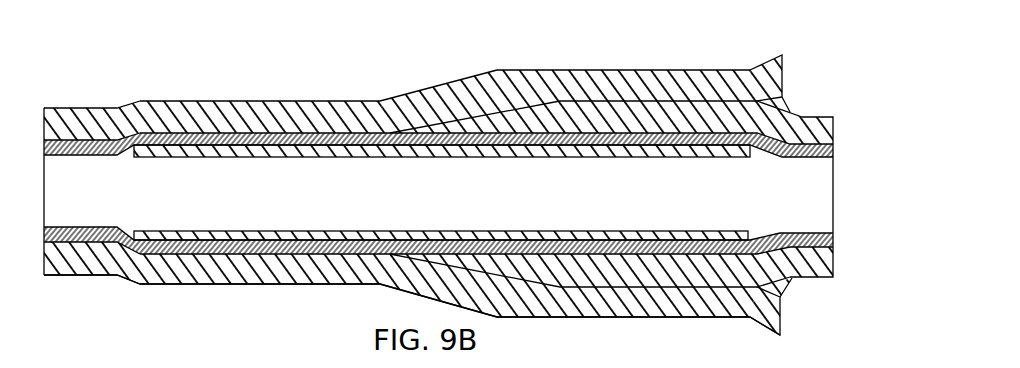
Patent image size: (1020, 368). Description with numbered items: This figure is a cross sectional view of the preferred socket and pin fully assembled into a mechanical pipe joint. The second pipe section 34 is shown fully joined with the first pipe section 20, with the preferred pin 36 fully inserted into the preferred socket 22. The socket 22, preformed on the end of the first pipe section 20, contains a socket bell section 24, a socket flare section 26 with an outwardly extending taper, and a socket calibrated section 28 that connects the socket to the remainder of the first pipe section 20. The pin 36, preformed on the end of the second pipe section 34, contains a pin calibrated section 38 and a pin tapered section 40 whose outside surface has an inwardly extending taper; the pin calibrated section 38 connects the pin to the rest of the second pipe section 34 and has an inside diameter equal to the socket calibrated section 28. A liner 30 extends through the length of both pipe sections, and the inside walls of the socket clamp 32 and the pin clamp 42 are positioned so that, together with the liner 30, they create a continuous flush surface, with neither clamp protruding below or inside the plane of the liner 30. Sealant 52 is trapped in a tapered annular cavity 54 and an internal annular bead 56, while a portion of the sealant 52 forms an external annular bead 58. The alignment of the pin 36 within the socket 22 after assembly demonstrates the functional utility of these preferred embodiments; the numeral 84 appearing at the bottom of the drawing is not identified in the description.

The first pipe section 20 is at (77, 112).
The socket 22 is at (327, 88).
The socket bell section 24 is at (545, 70).
The socket flare section 26 is at (753, 70).
The socket calibrated section 28 is at (265, 101).
The liner 30 is at (217, 131).
The socket clamp 32 is at (165, 134).
The second pipe section 34 is at (830, 117).
The pin 36 is at (667, 98).
The pin calibrated section 38 is at (716, 110).
The pin tapered section 40 is at (450, 130).
The pin clamp 42 is at (625, 150).
The sealant 52 is at (385, 231).
The tapered annular cavity 54 is at (496, 113).
The internal annular bead 56 is at (388, 157).
The external annular bead 58 is at (790, 110).
The lumen 84 is at (335, 362).